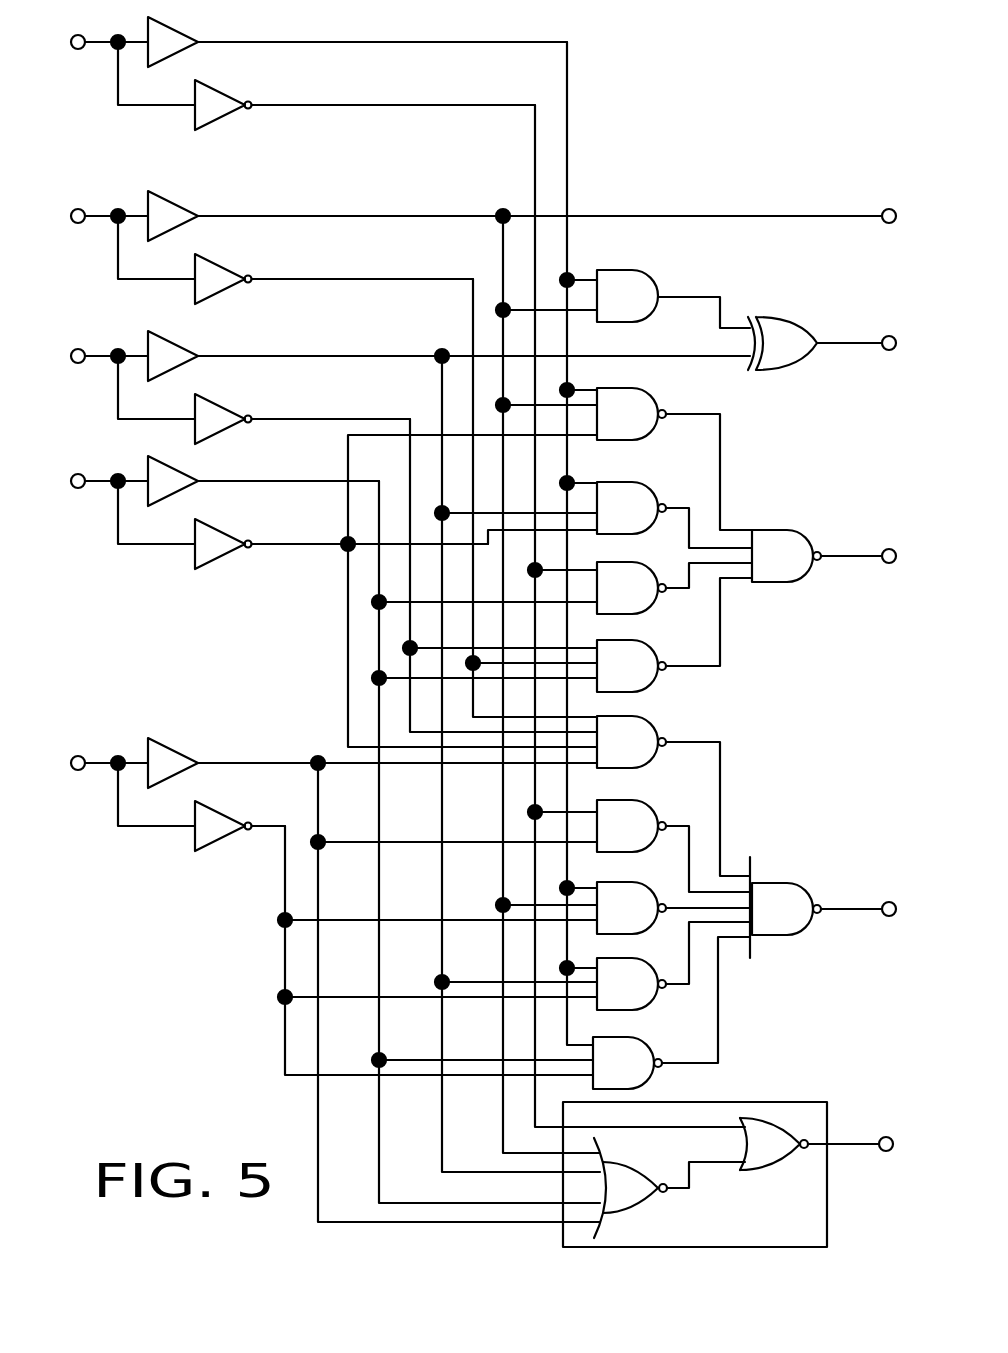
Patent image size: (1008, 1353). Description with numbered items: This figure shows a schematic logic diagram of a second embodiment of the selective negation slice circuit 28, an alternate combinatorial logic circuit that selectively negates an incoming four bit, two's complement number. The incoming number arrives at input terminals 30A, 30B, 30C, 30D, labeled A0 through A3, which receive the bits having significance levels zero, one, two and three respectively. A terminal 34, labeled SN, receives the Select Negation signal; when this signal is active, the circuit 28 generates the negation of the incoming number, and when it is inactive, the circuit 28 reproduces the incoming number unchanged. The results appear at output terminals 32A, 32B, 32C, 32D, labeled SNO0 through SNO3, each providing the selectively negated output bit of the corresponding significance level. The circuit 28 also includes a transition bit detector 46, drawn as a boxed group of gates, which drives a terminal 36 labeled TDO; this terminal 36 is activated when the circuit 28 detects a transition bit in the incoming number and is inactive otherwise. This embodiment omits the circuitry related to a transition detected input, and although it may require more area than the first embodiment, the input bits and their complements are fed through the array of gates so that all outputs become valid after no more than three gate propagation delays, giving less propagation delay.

The selective negation slice circuit 28 is at (163, 1078).
The input terminal 30A is at (78, 223).
The input terminal 30B is at (78, 363).
The input terminal 30C is at (78, 488).
The input terminal 30D is at (78, 770).
The output terminal 32A is at (889, 224).
The output terminal 32B is at (889, 351).
The output terminal 32C is at (889, 564).
The output terminal 32D is at (889, 917).
The terminal 34 is at (78, 49).
The terminal 36 is at (886, 1152).
The transition bit detector 46 is at (758, 1102).